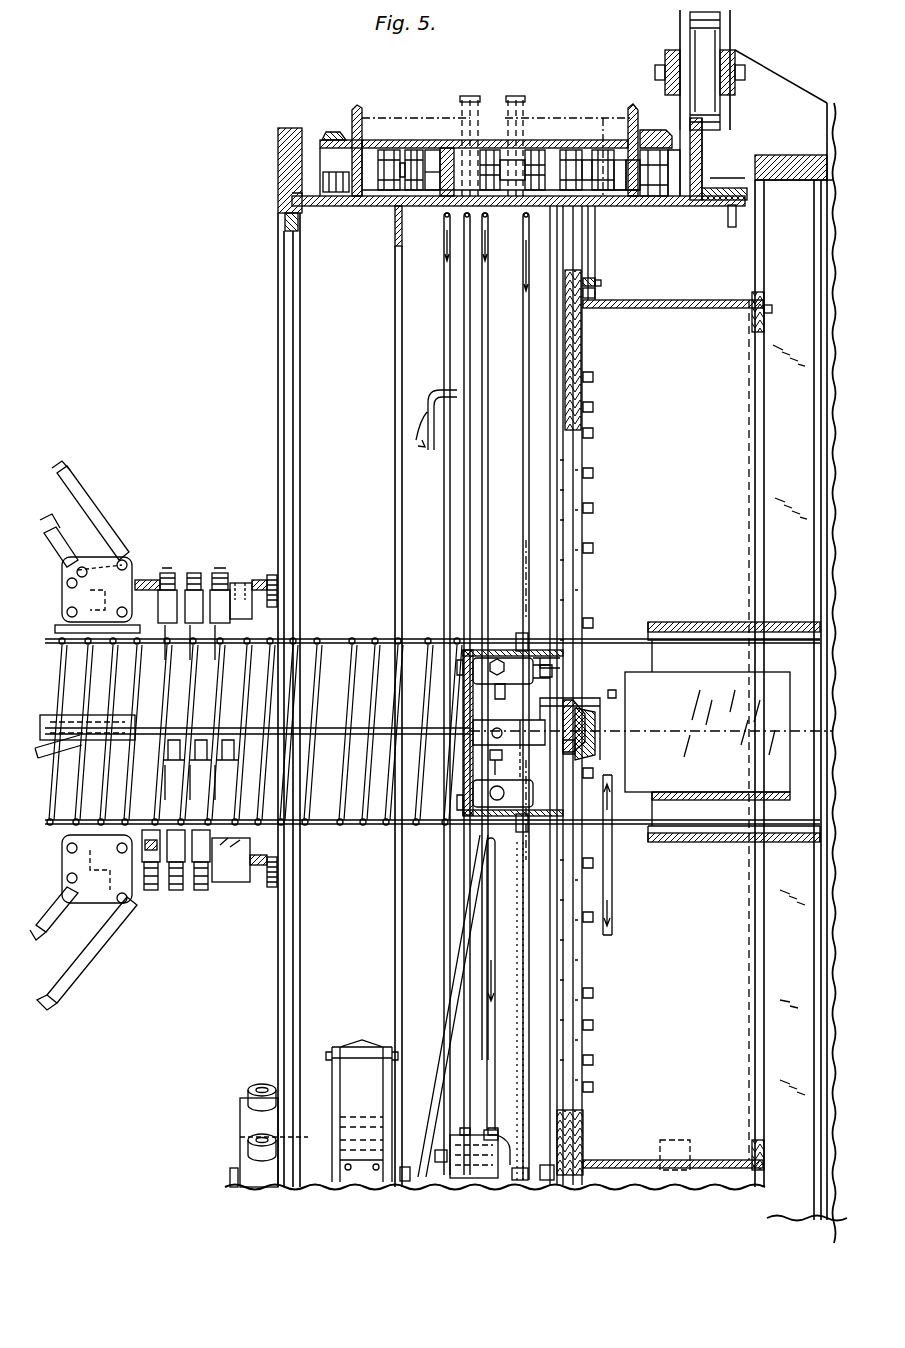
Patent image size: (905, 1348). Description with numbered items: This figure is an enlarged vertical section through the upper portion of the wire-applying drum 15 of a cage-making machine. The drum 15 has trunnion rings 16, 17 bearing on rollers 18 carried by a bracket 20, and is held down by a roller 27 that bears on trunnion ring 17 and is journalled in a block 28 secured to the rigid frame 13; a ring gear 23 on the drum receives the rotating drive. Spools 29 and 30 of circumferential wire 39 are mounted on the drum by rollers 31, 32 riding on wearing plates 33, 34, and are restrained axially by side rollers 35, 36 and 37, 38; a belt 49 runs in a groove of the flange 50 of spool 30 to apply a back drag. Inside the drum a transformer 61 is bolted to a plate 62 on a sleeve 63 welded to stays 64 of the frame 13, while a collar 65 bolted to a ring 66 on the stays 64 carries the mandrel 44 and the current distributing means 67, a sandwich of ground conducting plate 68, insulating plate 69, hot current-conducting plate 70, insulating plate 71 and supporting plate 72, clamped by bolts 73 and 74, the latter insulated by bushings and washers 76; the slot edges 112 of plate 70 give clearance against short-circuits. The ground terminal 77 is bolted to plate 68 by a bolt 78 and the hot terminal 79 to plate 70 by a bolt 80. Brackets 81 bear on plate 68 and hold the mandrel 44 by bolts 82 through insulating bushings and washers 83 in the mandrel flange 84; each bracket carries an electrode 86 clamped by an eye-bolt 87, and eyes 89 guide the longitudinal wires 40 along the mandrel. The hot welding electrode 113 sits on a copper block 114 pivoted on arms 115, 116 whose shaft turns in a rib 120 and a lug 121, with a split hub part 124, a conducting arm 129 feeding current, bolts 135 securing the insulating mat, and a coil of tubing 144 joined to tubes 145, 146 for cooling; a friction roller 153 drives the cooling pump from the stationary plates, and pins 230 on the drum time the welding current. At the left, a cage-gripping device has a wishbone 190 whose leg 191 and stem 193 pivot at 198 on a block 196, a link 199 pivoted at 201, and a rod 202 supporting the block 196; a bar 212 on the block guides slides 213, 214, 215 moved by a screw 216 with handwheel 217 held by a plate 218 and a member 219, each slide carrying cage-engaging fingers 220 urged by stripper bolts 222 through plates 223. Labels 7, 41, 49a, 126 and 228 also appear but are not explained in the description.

The conveyor chain 7 is at (450, 583).
The rigid frame 13 is at (826, 440).
The drum 15 is at (700, 210).
The trunnion ring 16 is at (277, 135).
The trunnion ring 17 is at (705, 150).
The rollers 18 is at (240, 1172).
The bracket 20 is at (240, 1128).
The ring gear 23 is at (750, 158).
The roller 27 is at (722, 14).
The block 28 is at (760, 68).
The spool 29 is at (355, 104).
The spool 30 is at (538, 115).
The rollers 31 is at (415, 150).
The rollers 32 is at (604, 150).
The wearing plate 33 is at (378, 208).
The wearing plate 34 is at (620, 208).
The rollers 35 is at (322, 181).
The rollers 36 is at (452, 158).
The rollers 37 is at (545, 208).
The rollers 38 is at (655, 208).
The circumferential wire 39 is at (612, 115).
The longitudinal wires 40 is at (352, 636).
The shaft 41 is at (514, 100).
The mandrel 44 is at (500, 650).
The belt 49 is at (652, 132).
The block 49a is at (333, 132).
The flange 50 is at (654, 172).
The transformer 61 is at (714, 682).
The plate 62 is at (762, 798).
The sleeve 63 is at (670, 622).
The stays 64 is at (764, 425).
The collar 65 is at (652, 300).
The ring 66 is at (758, 294).
The current distributing means 67 is at (592, 338).
The conducting plate 68 is at (574, 375).
The insulating plate 69 is at (584, 390).
The current-conducting plate 70 is at (574, 410).
The insulating plate 71 is at (578, 430).
The supporting plate 72 is at (584, 330).
The bolts 73 is at (595, 508).
The bolts 74 is at (596, 292).
The non-conducting bushing and washer 76 is at (596, 283).
The ground transformer-terminal 77 is at (600, 691).
The bolt 78 is at (600, 745).
The hot terminal 79 is at (596, 738).
The bolt 80 is at (590, 753).
The bracket 81 is at (555, 665).
The bolts 82 is at (462, 668).
The insulating bushings and washers 83 is at (488, 762).
The flange 84 is at (490, 690).
The electrode 86 is at (548, 695).
The eye-bolt 87 is at (514, 796).
The eyes 89 is at (524, 630).
The edges 112 is at (571, 485).
The hot welding electrode 113 is at (532, 766).
The block 114 is at (487, 908).
The arm 115 is at (458, 965).
The arm 116 is at (526, 878).
The rib 120 is at (396, 242).
The lug 121 is at (548, 1182).
The hub part 124 is at (345, 1178).
The bracket 126 is at (385, 1048).
The conducting arm 129 is at (510, 945).
The bolts 135 is at (432, 1148).
The coil of tubing 144 is at (490, 315).
The tube 145 is at (500, 1125).
The tube 146 is at (495, 1075).
The friction roller 153 is at (590, 346).
The wishbone 190 is at (95, 985).
The leg 191 is at (56, 466).
The stem 193 is at (72, 480).
The block 196 is at (95, 560).
The pivot 198 is at (135, 575).
The link 199 is at (42, 932).
The pivot 201 is at (80, 566).
The rod 202 is at (38, 560).
The bar 212 is at (238, 600).
The slide 213 is at (165, 645).
The slide 214 is at (180, 940).
The slide 215 is at (208, 645).
The screw 216 is at (148, 580).
The handwheel 217 is at (270, 574).
The plate 218 is at (250, 580).
The member 219 is at (95, 897).
The cage-engaging finger 220 is at (206, 775).
The stripper bolt 222 is at (190, 560).
The plate 223 is at (167, 585).
The base plate 228 is at (122, 640).
The pins 230 is at (740, 219).